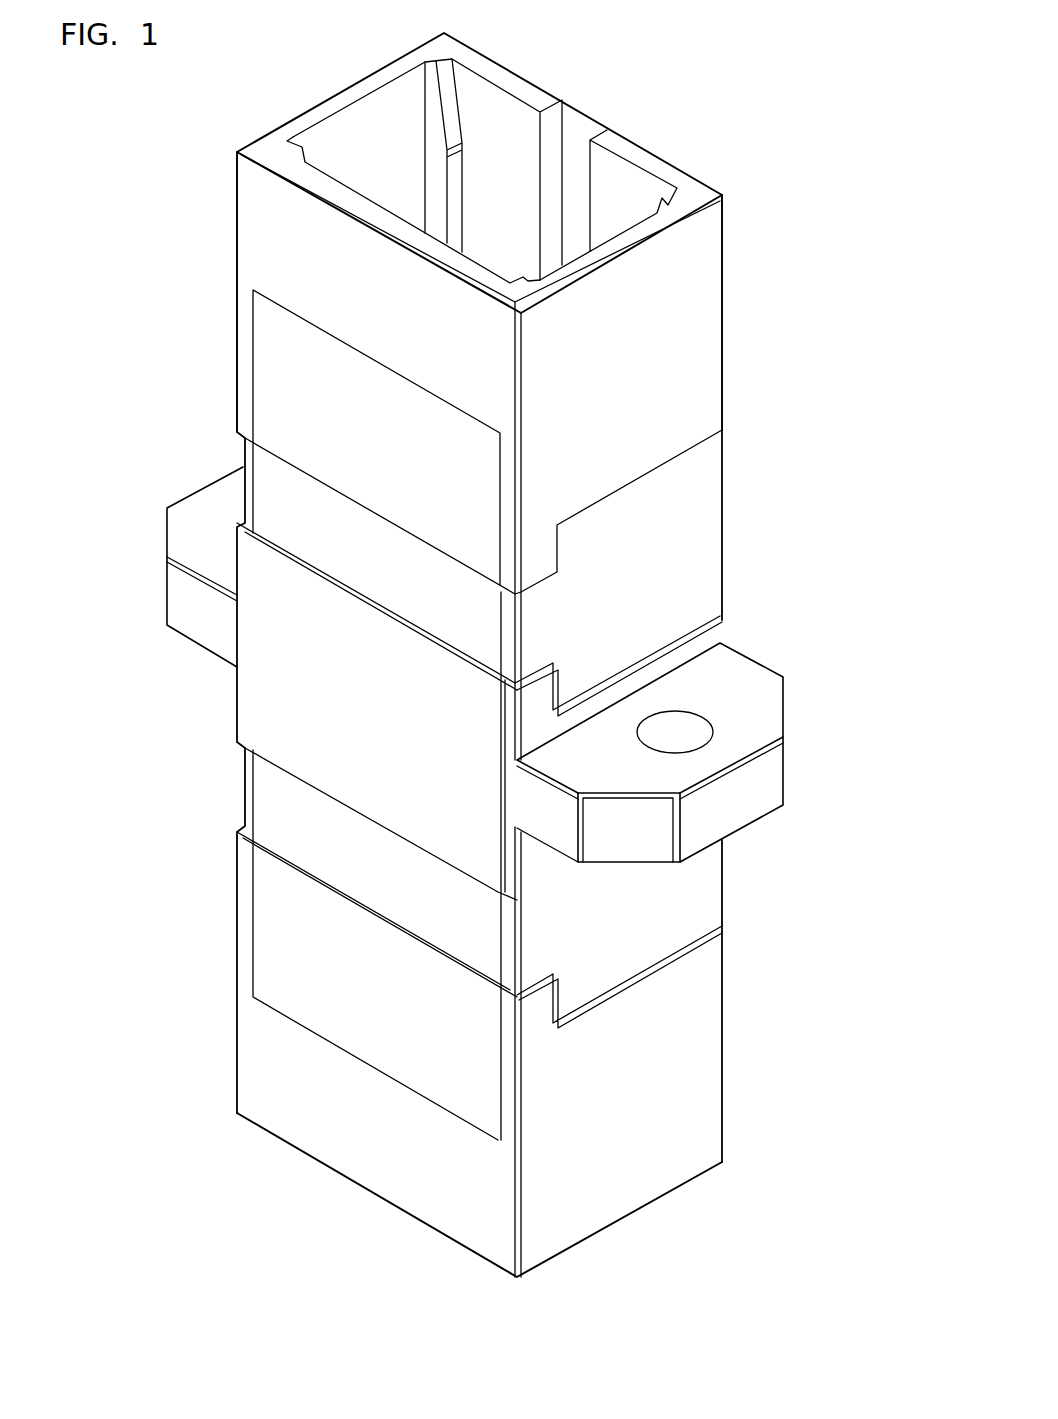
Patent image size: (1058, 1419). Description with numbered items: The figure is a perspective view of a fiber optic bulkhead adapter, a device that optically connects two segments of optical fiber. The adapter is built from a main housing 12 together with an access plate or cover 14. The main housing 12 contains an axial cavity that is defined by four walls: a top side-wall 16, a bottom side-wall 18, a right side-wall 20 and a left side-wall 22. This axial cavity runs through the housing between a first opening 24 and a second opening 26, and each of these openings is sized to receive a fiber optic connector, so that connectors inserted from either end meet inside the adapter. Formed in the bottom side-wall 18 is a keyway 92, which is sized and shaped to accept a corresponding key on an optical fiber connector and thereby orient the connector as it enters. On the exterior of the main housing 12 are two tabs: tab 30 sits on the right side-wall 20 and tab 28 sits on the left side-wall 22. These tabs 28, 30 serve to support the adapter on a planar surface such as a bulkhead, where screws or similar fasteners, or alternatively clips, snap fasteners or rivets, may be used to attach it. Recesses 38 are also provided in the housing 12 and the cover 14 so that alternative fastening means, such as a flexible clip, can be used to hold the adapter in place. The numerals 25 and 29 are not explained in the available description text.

The main housing 12 is at (317, 90).
The access plate or cover 14 is at (366, 457).
The top side-wall 16 is at (376, 319).
The bottom side-wall 18 is at (490, 174).
The right side-wall 20 is at (606, 379).
The left side-wall 22 is at (358, 159).
The first opening 24 is at (717, 173).
The front end 25 is at (218, 233).
The second opening 26 is at (342, 1192).
The tab 28 is at (217, 567).
The mounting hole 29 is at (697, 723).
The tab 30 is at (721, 814).
The recesses 38 is at (620, 589).
The keyway 92 is at (575, 152).